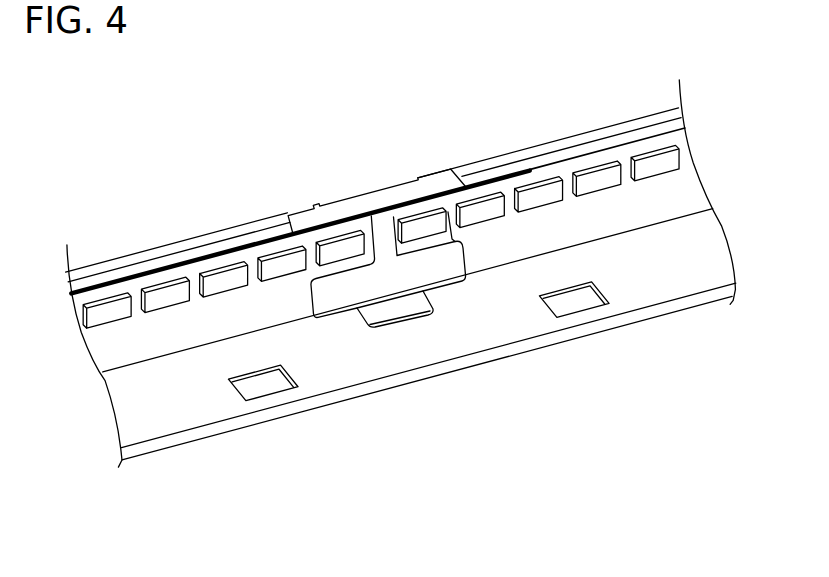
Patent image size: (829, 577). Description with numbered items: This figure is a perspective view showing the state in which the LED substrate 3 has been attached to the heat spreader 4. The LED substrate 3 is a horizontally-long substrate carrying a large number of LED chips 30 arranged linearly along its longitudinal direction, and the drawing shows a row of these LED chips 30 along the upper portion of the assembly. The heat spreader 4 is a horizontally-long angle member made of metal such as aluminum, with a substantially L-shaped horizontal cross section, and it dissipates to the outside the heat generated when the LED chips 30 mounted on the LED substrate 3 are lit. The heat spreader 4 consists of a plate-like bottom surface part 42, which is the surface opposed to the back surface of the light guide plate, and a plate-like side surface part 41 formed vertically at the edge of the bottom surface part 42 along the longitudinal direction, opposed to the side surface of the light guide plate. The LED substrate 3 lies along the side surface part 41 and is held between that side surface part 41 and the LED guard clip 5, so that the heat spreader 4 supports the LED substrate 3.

The LED substrate 3 is at (686, 194).
The heat spreader 4 is at (686, 360).
The LED guard clip 5 is at (400, 188).
The LED chip 30 is at (108, 312).
The side surface part 41 is at (583, 135).
The bottom surface part 42 is at (173, 412).